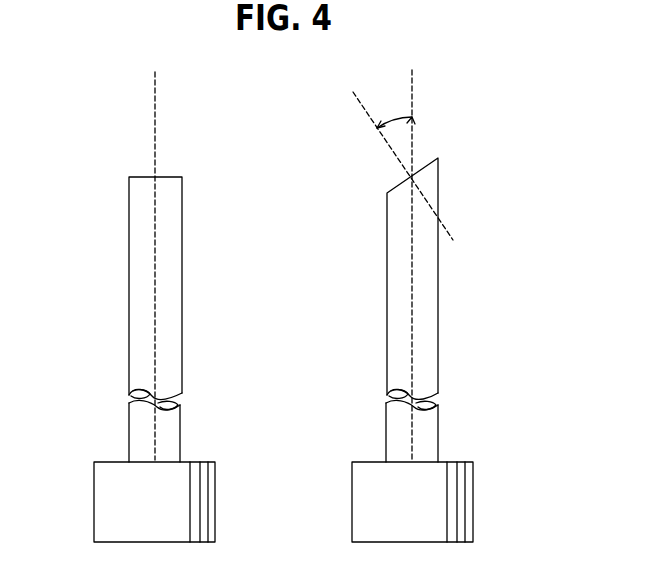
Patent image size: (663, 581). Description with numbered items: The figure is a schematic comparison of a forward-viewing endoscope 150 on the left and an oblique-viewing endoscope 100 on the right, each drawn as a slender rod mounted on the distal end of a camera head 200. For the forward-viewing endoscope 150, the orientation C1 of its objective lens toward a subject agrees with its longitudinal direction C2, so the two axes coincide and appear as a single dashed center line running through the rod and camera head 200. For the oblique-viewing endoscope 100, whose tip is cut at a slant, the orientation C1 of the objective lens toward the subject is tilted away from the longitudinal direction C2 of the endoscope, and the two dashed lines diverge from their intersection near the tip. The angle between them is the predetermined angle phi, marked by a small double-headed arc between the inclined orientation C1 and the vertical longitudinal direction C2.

The forward-viewing endoscope 150 is at (129, 224).
The oblique-viewing endoscope 100 is at (387, 225).
The camera head 200 is at (94, 490).
The orientation of the objective lens C1 is at (157, 92).
The longitudinal direction C2 is at (413, 82).
The predetermined angle phi is at (396, 108).